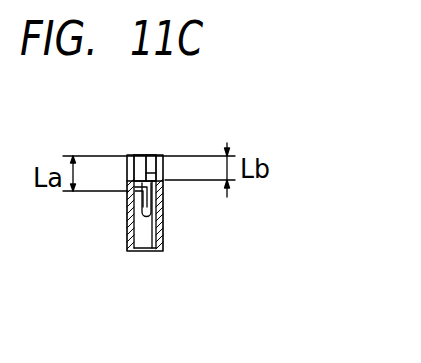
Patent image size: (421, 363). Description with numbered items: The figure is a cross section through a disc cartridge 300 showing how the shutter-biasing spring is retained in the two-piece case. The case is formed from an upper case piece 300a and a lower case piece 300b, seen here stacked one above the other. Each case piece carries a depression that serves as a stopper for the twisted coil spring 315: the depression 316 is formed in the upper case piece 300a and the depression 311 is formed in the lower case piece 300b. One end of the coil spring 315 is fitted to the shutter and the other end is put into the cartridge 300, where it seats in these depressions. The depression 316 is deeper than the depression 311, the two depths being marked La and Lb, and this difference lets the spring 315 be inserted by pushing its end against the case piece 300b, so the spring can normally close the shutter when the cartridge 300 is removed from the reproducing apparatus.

The cartridge 300 is at (164, 208).
The upper case piece 300a is at (133, 156).
The lower case piece 300b is at (149, 156).
The depression 311 is at (160, 173).
The twisted coil spring 315 is at (146, 218).
The depression 316 is at (134, 184).